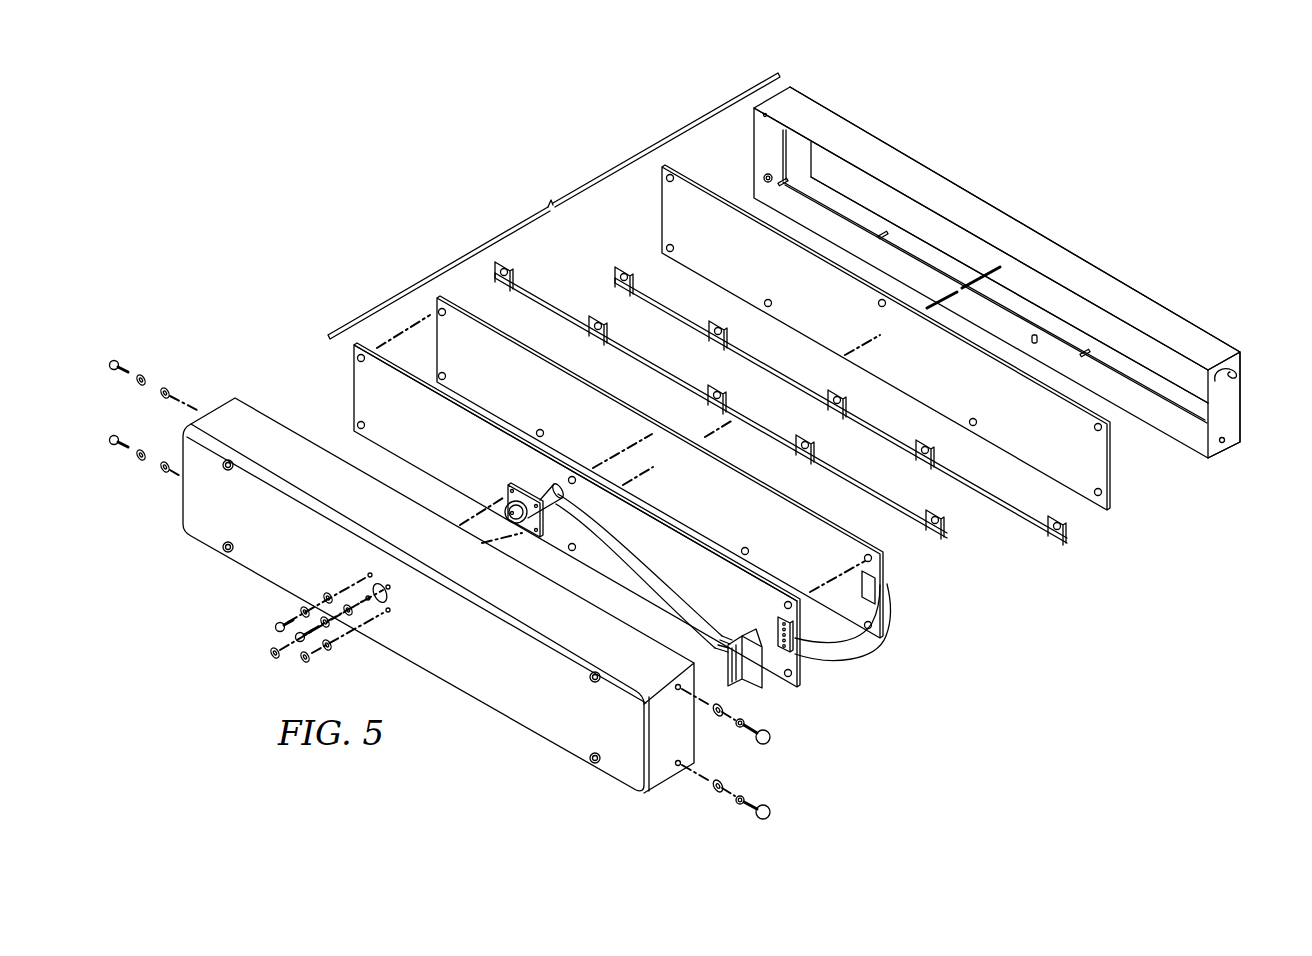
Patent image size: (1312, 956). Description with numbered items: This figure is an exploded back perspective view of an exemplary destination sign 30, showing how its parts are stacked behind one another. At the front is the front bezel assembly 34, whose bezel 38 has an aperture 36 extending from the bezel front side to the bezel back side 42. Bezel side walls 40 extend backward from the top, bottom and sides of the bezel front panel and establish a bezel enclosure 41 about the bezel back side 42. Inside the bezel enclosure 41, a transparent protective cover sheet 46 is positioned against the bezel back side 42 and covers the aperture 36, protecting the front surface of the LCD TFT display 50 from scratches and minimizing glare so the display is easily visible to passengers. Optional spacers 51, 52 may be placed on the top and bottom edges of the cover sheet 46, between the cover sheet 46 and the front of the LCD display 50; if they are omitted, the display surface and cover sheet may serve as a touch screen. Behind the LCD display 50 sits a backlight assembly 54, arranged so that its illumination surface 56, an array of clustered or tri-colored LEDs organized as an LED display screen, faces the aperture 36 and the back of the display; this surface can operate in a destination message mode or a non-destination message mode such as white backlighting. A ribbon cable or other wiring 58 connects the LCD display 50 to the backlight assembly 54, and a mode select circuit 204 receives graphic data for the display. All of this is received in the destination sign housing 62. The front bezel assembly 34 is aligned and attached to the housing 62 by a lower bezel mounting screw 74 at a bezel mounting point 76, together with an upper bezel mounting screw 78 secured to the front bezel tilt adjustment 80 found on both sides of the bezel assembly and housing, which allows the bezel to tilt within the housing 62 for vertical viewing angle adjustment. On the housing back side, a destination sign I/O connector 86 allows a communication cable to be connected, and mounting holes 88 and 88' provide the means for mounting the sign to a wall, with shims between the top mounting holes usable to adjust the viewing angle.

The destination sign 30 is at (430, 202).
The front bezel assembly 34 is at (554, 206).
The aperture 36 is at (1163, 355).
The bezel 38 is at (1012, 220).
The bezel side walls 40 is at (920, 173).
The bezel enclosure 41 is at (797, 153).
The bezel back side 42 is at (1188, 404).
The protective cover sheet 46 is at (1110, 493).
The LCD TFT display 50 is at (887, 567).
The spacer 51 is at (1067, 531).
The spacer 52 is at (947, 528).
The backlight assembly 54 is at (350, 382).
The illumination surface 56 is at (702, 535).
The ribbon cable 58 is at (870, 650).
The destination sign housing 62 is at (520, 727).
The lower bezel mounting screw 74 is at (758, 817).
The bezel mounting point 76 is at (1225, 444).
The upper bezel mounting screw 78 is at (760, 730).
The front bezel tilt adjustment 80 is at (1238, 378).
The destination sign I/O connector 86 is at (512, 488).
The mounting holes 88 is at (355, 618).
The mounting hole 88' is at (361, 547).
The mode select circuit 204 is at (778, 623).